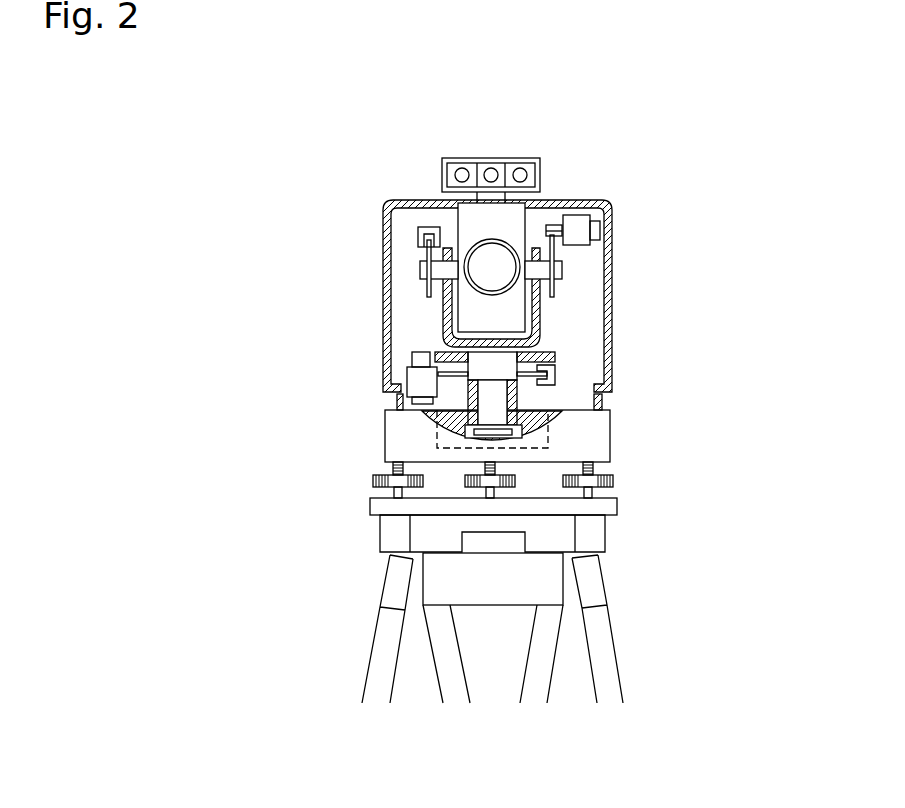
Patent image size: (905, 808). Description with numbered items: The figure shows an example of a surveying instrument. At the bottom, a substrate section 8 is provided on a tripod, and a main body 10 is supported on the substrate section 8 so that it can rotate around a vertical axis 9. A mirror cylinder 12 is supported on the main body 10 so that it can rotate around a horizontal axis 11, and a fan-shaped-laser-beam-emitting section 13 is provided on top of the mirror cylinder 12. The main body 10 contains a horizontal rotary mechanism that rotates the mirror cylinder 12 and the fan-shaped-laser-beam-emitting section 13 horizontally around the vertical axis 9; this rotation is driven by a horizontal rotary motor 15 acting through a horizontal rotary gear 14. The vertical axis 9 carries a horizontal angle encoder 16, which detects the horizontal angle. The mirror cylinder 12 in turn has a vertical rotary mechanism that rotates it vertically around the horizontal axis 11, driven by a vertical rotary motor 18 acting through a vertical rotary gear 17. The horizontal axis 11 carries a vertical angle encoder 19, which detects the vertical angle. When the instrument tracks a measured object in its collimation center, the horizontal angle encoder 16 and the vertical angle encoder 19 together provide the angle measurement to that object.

The substrate section 8 is at (412, 442).
The vertical axis 9 is at (492, 397).
The main body 10 is at (612, 292).
The horizontal axis 11 is at (420, 272).
The mirror cylinder 12 is at (473, 230).
The fan-shaped-laser-beam-emitting section 13 is at (490, 158).
The horizontal rotary gear 14 is at (413, 358).
The horizontal rotary motor 15 is at (417, 382).
The horizontal angle encoder 16 is at (555, 370).
The vertical rotary gear 17 is at (556, 226).
The vertical rotary motor 18 is at (582, 230).
The vertical angle encoder 19 is at (420, 232).